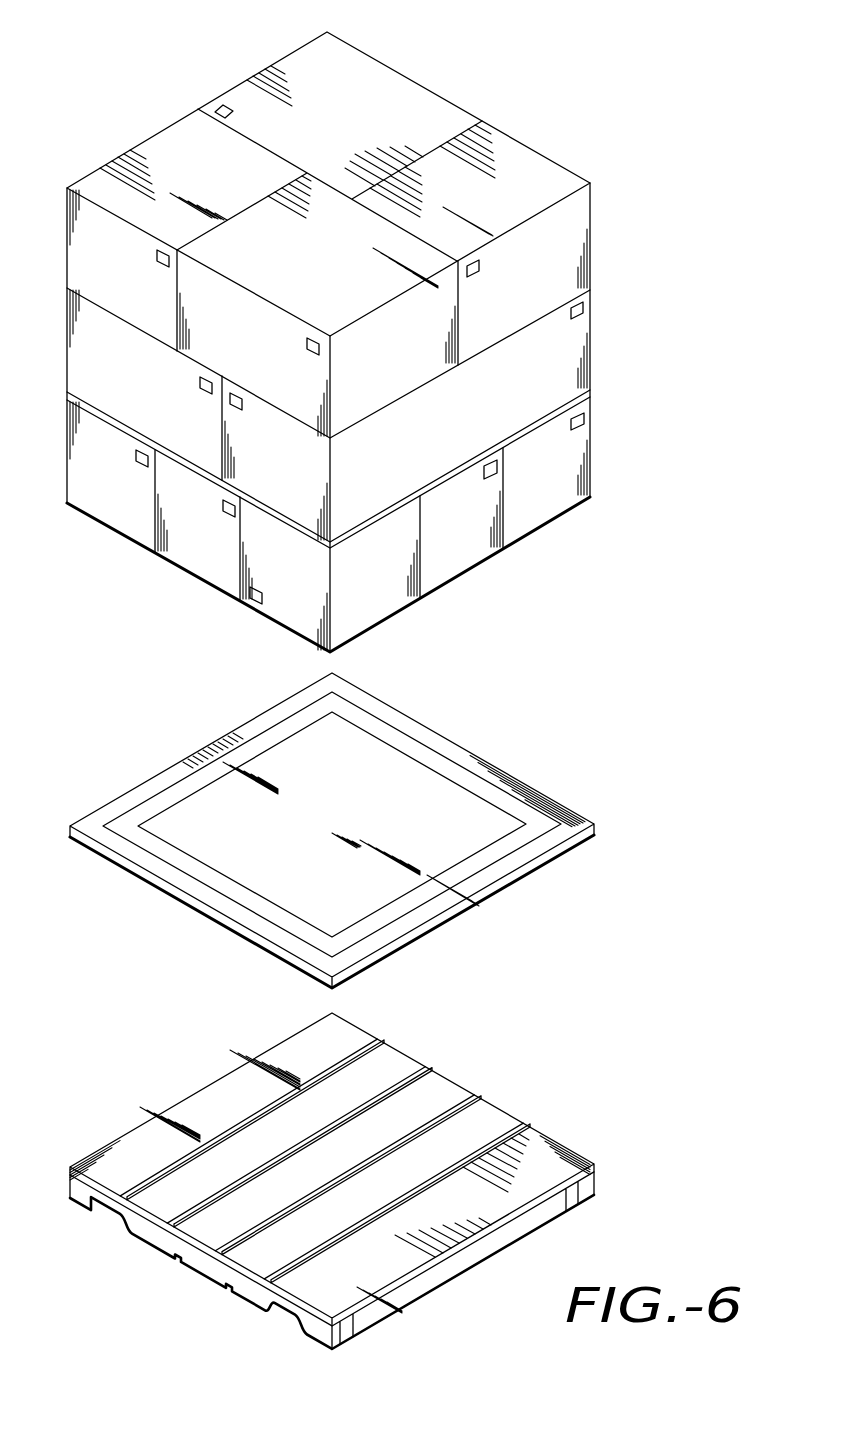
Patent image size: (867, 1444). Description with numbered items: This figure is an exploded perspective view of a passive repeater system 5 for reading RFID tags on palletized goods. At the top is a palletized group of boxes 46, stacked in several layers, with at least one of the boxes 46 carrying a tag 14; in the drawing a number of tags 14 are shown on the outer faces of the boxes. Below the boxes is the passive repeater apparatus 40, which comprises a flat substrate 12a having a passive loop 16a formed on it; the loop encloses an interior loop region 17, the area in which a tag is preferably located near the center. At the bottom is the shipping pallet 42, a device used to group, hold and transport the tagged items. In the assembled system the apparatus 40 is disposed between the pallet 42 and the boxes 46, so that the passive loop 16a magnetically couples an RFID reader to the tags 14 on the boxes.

The passive repeater system 5 is at (541, 86).
The tag 14 is at (233, 116).
The boxes 46 is at (593, 360).
The passive repeater apparatus 40 is at (524, 781).
The loop region 17 is at (346, 808).
The passive loop 16a is at (508, 856).
The substrate 12a is at (403, 928).
The shipping pallet 42 is at (524, 1118).